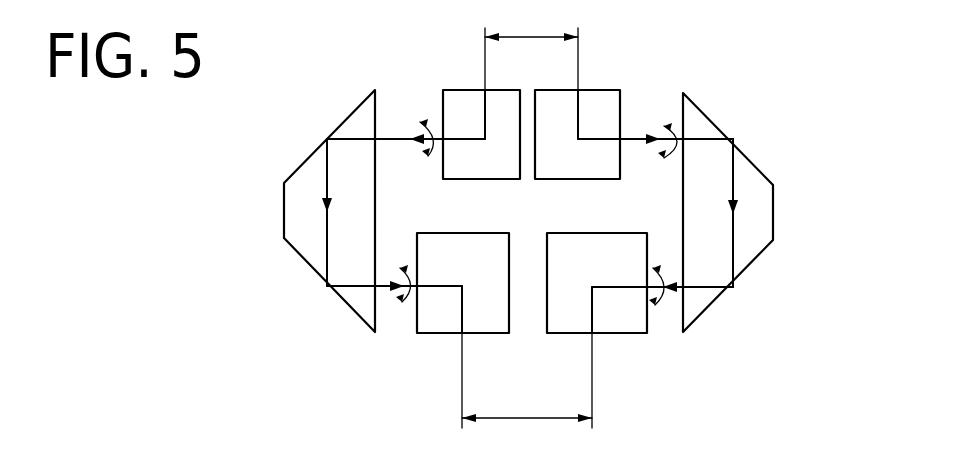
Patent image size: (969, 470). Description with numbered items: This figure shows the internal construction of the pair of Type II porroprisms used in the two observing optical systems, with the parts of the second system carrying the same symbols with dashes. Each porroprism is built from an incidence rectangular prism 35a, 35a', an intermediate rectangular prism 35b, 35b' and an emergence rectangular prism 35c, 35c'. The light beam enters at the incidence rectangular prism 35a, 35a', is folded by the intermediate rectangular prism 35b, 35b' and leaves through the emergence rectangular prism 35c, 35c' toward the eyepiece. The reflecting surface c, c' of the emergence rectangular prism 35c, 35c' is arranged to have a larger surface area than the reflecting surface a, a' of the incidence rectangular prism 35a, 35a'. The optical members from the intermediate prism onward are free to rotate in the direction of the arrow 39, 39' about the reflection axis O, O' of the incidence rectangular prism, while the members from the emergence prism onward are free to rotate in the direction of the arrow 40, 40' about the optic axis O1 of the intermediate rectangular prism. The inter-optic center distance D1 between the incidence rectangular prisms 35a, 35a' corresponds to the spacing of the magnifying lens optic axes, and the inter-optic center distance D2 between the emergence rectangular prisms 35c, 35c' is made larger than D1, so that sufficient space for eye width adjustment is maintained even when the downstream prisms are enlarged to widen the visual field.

The incidence rectangular prism 35a is at (601, 108).
The incidence rectangular prism 35a' is at (461, 107).
The intermediate rectangular prism 35b is at (772, 212).
The intermediate rectangular prism 35b' is at (303, 211).
The emergence rectangular prism 35c is at (628, 311).
The emergence rectangular prism 35c' is at (455, 320).
The arrow 39 is at (717, 126).
The arrow 39' is at (409, 164).
The arrow 40 is at (708, 311).
The arrow 40' is at (439, 272).
The reflection axis O is at (658, 175).
The reflection axis O' is at (403, 172).
The optic axis O1 is at (391, 289).
The inter-optic center distance D1 is at (531, 45).
The inter-optic center distance D2 is at (527, 396).
The reflecting surface a is at (574, 194).
The reflecting surface a' is at (502, 194).
The reflecting surface c is at (622, 222).
The reflecting surface c' is at (456, 218).